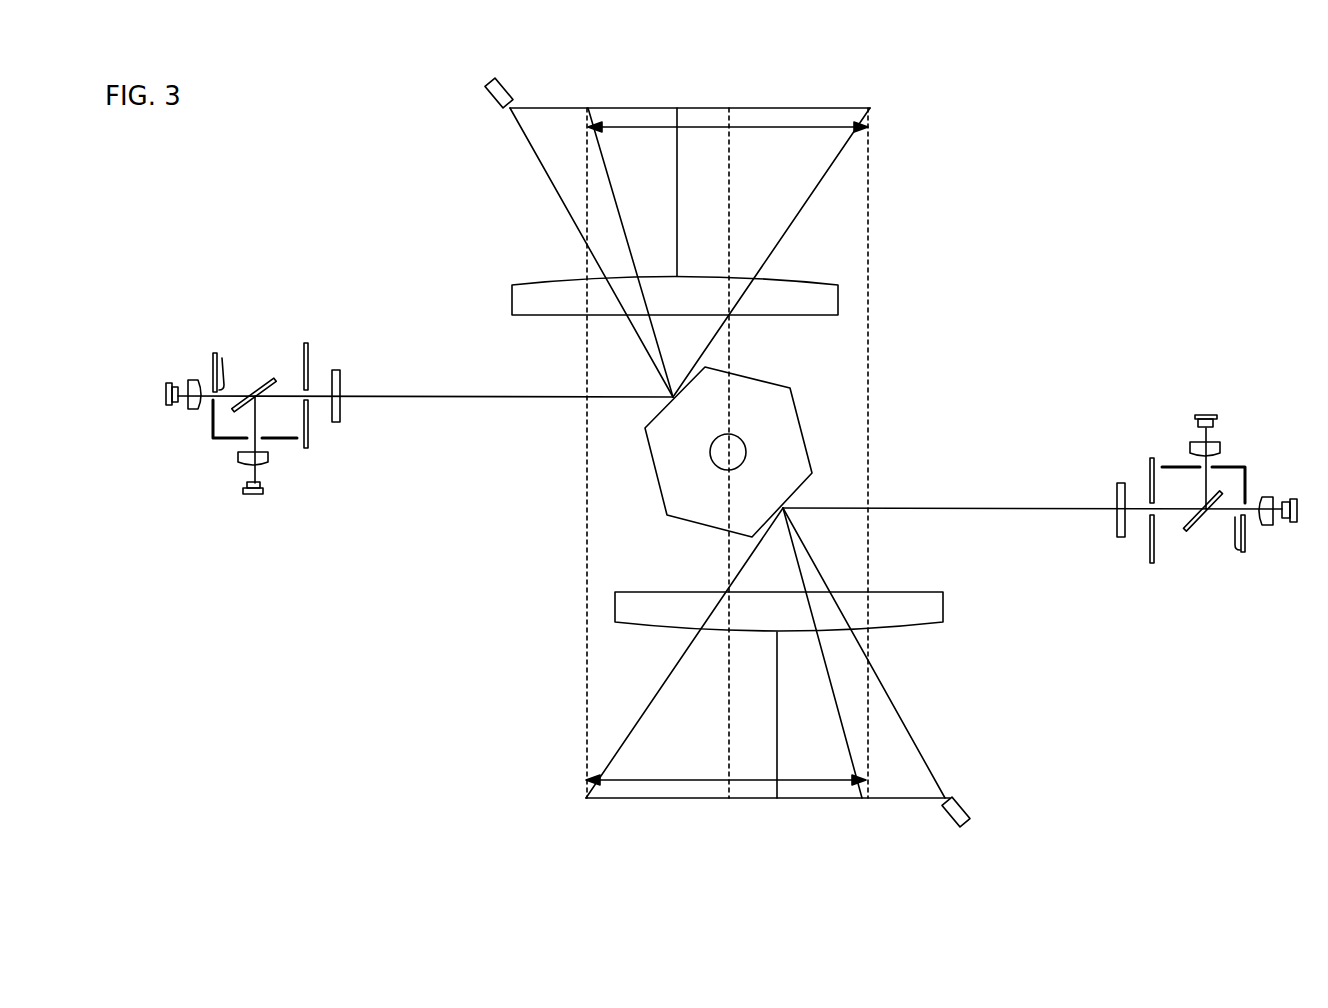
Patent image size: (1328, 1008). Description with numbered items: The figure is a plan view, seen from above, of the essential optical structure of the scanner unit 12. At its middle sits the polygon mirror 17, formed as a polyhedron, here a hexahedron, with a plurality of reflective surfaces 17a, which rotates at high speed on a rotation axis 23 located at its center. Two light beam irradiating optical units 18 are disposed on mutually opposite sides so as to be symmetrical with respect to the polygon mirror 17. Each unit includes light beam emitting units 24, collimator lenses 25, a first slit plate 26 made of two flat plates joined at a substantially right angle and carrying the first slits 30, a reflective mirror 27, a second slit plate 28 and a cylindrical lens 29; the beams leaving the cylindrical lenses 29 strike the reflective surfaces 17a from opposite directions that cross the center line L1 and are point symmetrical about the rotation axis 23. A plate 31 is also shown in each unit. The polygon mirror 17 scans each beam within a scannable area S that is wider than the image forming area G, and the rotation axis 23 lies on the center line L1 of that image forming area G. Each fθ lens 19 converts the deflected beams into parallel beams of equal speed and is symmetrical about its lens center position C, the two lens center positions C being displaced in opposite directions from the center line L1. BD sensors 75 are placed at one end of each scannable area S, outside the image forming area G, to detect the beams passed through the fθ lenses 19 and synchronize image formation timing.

The scanner unit 12 is at (1016, 748).
The polygon mirror 17 is at (734, 455).
The reflective surfaces 17a is at (772, 376).
The light beam irradiating optical unit 18 is at (251, 318).
The fθ lens 19 is at (838, 302).
The rotation axis 23 is at (737, 447).
The light beam emitting unit 24 is at (173, 386).
The collimator lens 25 is at (193, 408).
The first slit plate 26 is at (215, 357).
The reflective mirror 27 is at (261, 384).
The second slit plate 28 is at (310, 347).
The cylindrical lens 29 is at (336, 371).
The first slit 30 is at (1198, 471).
The aperture plate 31 is at (310, 401).
The BD sensor 75 is at (500, 80).
The scannable area S is at (697, 106).
The image forming area G is at (761, 129).
The lens center position C is at (678, 275).
The center line L1 is at (733, 230).